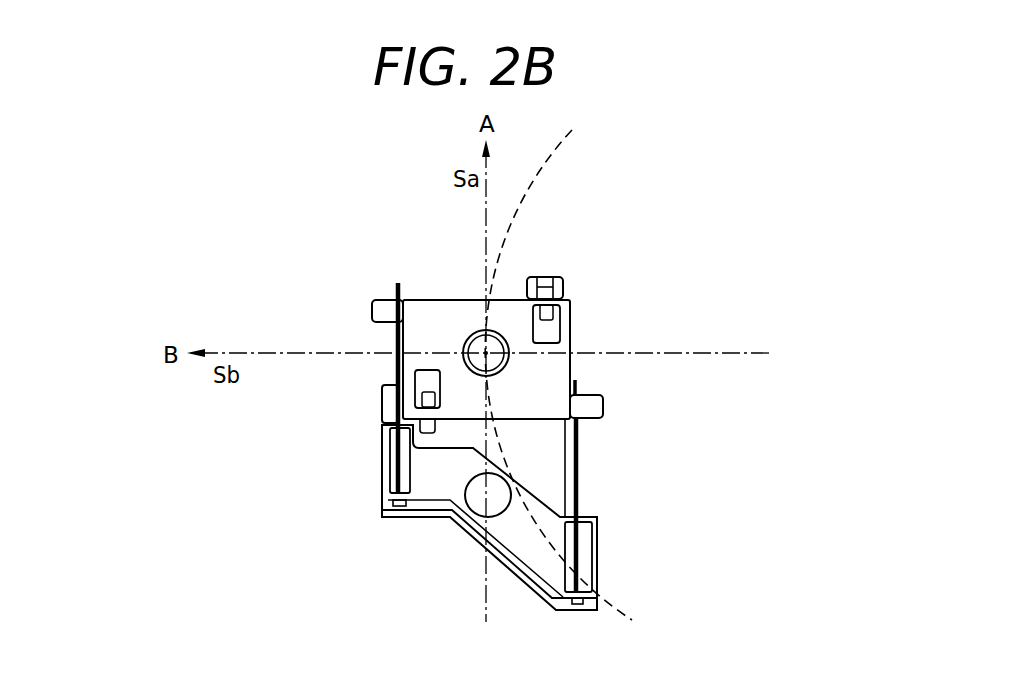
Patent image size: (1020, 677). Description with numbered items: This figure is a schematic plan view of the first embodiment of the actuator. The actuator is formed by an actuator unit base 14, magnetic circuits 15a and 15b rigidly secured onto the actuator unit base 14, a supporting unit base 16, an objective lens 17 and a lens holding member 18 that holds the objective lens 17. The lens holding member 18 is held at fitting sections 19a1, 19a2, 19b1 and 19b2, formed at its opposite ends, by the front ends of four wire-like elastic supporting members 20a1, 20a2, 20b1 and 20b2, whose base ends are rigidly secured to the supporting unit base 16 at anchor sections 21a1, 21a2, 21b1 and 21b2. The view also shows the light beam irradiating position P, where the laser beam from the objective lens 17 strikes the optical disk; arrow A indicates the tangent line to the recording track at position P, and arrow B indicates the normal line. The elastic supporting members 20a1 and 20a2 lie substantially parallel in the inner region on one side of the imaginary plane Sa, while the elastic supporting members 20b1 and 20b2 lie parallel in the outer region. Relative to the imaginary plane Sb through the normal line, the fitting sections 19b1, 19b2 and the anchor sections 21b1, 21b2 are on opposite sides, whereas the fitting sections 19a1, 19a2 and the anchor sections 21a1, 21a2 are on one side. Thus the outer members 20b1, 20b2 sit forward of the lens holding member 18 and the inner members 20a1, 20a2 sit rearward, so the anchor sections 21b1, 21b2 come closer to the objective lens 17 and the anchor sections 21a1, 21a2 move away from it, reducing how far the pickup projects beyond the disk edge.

The actuator unit base 14 is at (467, 533).
The magnetic circuit 15a is at (548, 277).
The magnetic circuit 15b is at (382, 402).
The supporting unit base 16 is at (420, 470).
The objective lens 17 is at (478, 336).
The lens holding member 18 is at (560, 363).
The fitting section 19a1 is at (670, 399).
The fitting section 19a2 is at (605, 406).
The fitting section 19b1 is at (294, 302).
The fitting section 19b2 is at (372, 302).
The elastic supporting member 20a1 is at (663, 505).
The elastic supporting member 20a2 is at (583, 469).
The elastic supporting member 20b1 is at (308, 388).
The elastic supporting member 20b2 is at (397, 338).
The anchor section 21a1 is at (601, 630).
The anchor section 21a2 is at (583, 611).
The anchor section 21b1 is at (389, 539).
The anchor section 21b2 is at (398, 506).
The light beam irradiating position P is at (484, 350).